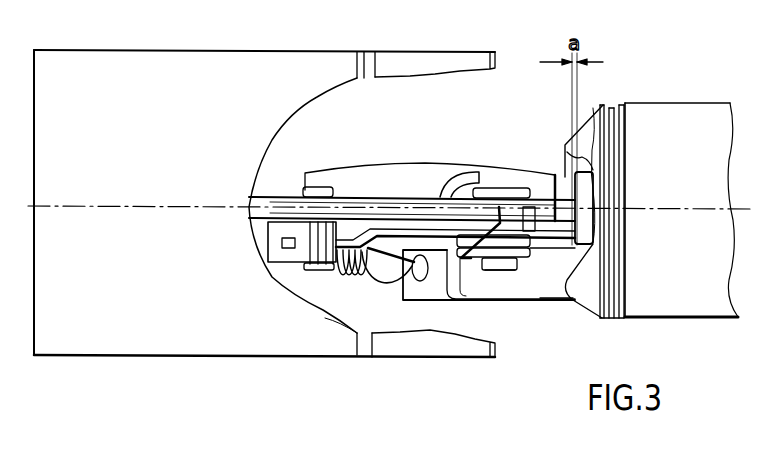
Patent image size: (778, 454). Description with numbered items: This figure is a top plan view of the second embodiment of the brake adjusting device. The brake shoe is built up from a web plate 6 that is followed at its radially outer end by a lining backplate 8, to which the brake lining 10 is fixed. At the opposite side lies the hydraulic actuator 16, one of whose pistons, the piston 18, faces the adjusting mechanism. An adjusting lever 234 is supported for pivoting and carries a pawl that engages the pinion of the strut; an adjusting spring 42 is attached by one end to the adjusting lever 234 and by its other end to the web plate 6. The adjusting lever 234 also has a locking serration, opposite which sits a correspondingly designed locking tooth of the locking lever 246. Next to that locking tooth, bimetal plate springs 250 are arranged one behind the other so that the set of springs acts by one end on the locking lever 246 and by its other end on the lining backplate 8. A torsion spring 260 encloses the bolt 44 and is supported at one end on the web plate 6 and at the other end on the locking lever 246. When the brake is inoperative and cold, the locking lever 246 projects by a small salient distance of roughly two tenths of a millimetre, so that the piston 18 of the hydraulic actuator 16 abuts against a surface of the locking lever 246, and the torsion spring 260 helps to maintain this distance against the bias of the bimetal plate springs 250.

The brake lining 10 is at (137, 71).
The lining backplate 8 is at (447, 62).
The web plate 6 is at (283, 208).
The locking lever 246 is at (378, 226).
The torsion spring 260 is at (479, 175).
The bimetal plate springs 250 is at (320, 244).
The adjusting spring 42 is at (357, 285).
The adjusting lever 234 is at (431, 285).
The bolt 44 is at (507, 268).
The piston 18 is at (592, 112).
The hydraulic actuator 16 is at (684, 117).